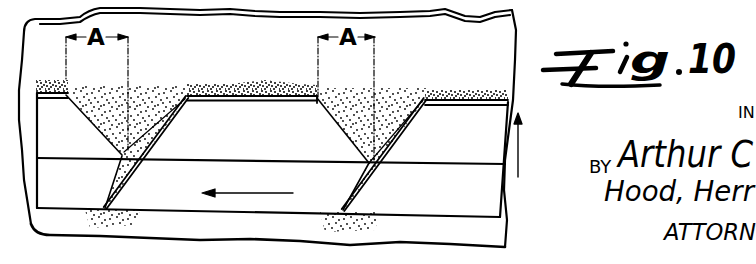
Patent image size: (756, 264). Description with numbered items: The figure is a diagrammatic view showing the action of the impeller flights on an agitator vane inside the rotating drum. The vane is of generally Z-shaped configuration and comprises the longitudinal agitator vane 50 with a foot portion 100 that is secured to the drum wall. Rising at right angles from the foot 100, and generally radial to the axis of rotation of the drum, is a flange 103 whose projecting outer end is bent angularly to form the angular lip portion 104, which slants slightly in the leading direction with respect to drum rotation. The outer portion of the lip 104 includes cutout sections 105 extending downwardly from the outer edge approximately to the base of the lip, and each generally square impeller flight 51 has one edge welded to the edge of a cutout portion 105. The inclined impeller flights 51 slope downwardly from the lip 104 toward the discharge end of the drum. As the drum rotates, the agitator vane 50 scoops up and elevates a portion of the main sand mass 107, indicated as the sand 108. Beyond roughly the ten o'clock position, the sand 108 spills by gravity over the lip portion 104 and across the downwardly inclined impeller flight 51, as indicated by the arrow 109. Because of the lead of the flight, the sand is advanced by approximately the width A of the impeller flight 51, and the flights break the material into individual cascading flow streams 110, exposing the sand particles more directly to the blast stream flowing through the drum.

The longitudinal agitator vane 50 is at (226, 147).
The impeller flight 51 is at (150, 174).
The foot portion 100 is at (452, 200).
The flange 103 is at (440, 168).
The angular lip portion 104 is at (307, 147).
The cutout section 105 is at (183, 106).
The raw moist sand mass 107 is at (113, 162).
The scooped sand 108 is at (110, 163).
The arrow 109 is at (70, 138).
The cascading flow streams 110 is at (172, 148).